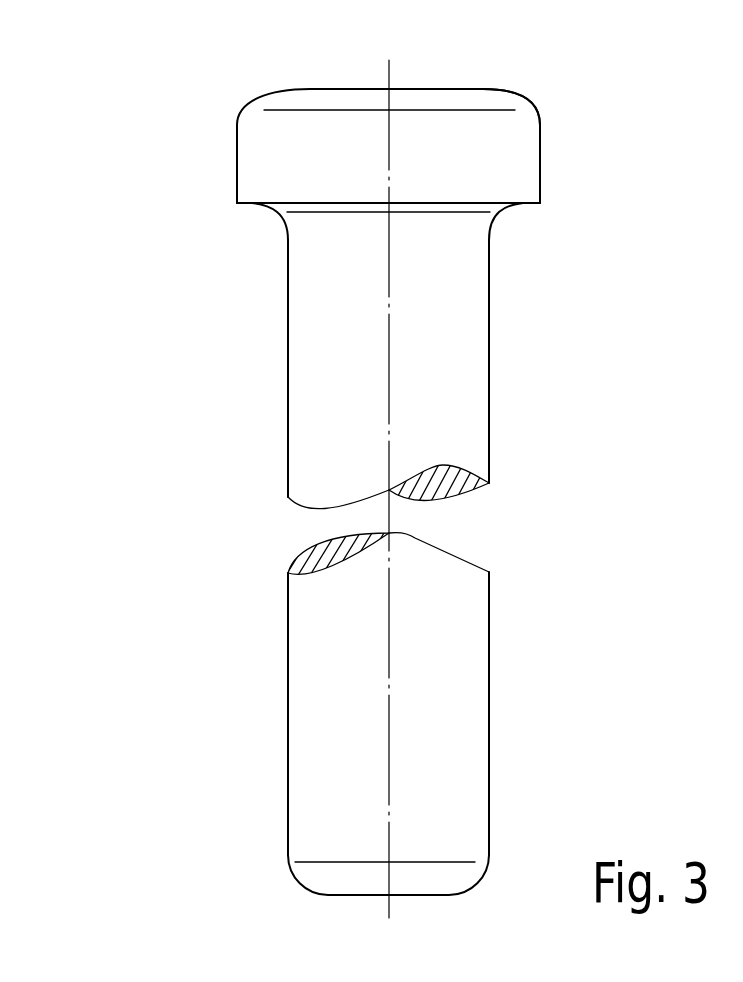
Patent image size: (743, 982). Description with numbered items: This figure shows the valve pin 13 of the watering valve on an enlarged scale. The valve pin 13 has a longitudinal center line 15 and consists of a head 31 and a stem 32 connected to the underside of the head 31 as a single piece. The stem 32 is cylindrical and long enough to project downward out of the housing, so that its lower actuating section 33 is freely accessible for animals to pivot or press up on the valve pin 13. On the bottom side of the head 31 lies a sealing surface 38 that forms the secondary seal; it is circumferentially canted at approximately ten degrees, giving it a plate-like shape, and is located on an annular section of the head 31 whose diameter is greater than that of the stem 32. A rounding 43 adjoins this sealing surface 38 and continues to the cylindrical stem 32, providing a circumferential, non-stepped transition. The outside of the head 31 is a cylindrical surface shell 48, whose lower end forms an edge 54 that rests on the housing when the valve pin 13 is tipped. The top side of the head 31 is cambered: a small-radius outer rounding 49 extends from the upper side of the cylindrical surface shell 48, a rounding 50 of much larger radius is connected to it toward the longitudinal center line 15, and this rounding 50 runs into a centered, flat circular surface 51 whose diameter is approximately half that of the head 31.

The valve pin 13 is at (557, 415).
The longitudinal center line 15 is at (389, 722).
The head 31 is at (510, 150).
The stem 32 is at (467, 342).
The lower actuating section 33 is at (465, 798).
The sealing surface 38 is at (253, 207).
The rounding 43 is at (497, 217).
The cylindrical surface shell 48 is at (540, 178).
The outer rounding 49 is at (535, 108).
The rounding 50 is at (495, 90).
The flat circular surface 51 is at (428, 90).
The edge 54 is at (540, 203).